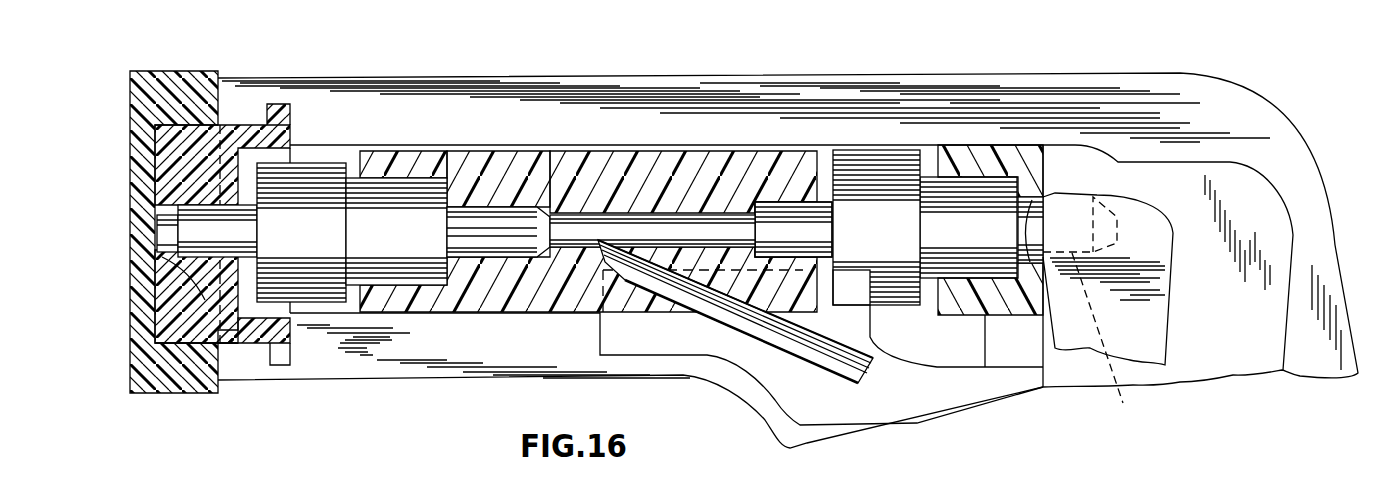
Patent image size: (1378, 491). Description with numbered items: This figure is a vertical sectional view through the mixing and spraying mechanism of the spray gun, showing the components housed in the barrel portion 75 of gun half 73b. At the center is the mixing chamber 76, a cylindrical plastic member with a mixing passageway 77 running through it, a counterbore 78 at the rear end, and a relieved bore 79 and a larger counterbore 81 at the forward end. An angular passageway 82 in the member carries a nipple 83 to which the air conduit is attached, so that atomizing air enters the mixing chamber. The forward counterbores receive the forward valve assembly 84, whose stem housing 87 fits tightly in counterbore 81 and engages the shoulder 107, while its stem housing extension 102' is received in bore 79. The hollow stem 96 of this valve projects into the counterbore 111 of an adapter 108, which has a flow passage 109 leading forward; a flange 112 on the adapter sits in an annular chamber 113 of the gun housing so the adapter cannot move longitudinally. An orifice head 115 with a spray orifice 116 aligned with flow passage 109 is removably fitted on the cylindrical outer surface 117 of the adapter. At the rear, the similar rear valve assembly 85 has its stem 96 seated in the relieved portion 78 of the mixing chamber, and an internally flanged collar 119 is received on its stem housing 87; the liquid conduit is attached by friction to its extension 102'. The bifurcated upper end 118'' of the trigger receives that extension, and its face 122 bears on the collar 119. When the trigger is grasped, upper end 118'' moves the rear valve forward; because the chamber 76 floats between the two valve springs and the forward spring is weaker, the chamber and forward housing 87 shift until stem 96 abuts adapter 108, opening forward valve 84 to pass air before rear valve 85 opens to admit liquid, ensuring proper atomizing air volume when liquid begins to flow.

The gun half 73b is at (633, 100).
The barrel portion 75 is at (413, 78).
The mixing chamber 76 is at (568, 163).
The mixing passageway 77 is at (667, 227).
The counterbore 78 is at (763, 200).
The relieved bore 79 is at (493, 207).
The counterbore 81 is at (415, 177).
The angular passageway 82 is at (592, 253).
The nipple 83 is at (780, 348).
The forward valve assembly 84 is at (318, 180).
The rear valve assembly 85 is at (875, 177).
The stem housing 87 is at (413, 268).
The hollow stem 96 is at (235, 222).
The stem housing extension 102' is at (799, 315).
The shoulder 107 is at (453, 187).
The adapter 108 is at (280, 113).
The flow passage 109 is at (155, 283).
The counterbore 111 is at (157, 337).
The flange 112 is at (280, 363).
The annular chamber 113 is at (292, 117).
The orifice head 115 is at (158, 70).
The spray orifice 116 is at (152, 237).
The cylindrical outer surface 117 is at (250, 343).
The upper end of trigger 118'' is at (1157, 279).
The internally flanged collar 119 is at (988, 145).
The face 122 is at (1033, 150).